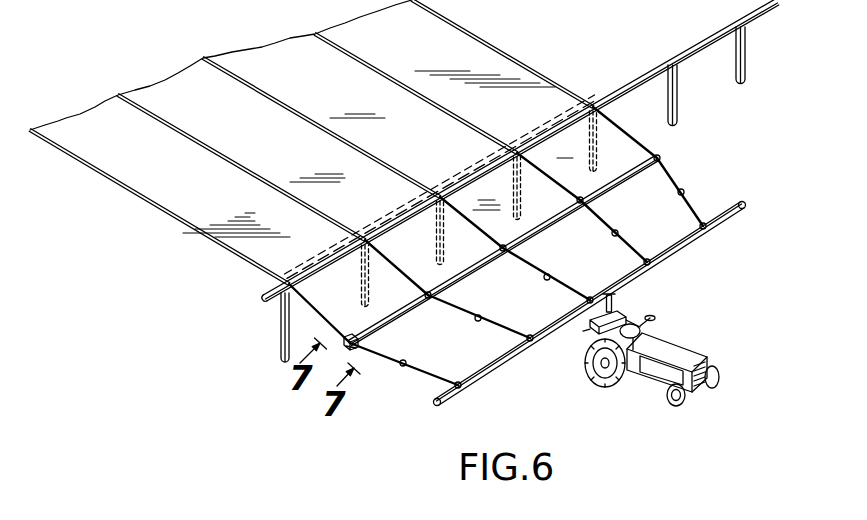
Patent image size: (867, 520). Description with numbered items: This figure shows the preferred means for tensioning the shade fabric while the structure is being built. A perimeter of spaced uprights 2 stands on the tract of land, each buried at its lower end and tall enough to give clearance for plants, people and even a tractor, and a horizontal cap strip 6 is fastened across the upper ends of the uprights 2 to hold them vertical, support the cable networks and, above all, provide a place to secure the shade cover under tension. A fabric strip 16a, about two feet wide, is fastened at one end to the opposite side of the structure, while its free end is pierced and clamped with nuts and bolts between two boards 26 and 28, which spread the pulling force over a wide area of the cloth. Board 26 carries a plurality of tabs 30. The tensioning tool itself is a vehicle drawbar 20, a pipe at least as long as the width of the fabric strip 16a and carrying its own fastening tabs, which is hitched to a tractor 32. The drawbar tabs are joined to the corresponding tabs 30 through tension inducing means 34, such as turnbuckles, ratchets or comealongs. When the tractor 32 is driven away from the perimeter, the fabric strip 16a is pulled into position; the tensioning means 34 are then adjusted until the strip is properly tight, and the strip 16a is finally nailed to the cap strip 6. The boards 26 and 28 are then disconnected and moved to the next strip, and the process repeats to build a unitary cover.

The fabric strip 16a is at (271, 58).
The cap strip 6 is at (265, 298).
The upright 2 is at (282, 325).
The tab 30 is at (429, 294).
The board 26 is at (353, 338).
The board 28 is at (358, 349).
The tension inducing means 34 is at (682, 193).
The vehicle drawbar 20 is at (440, 404).
The tractor 32 is at (694, 349).